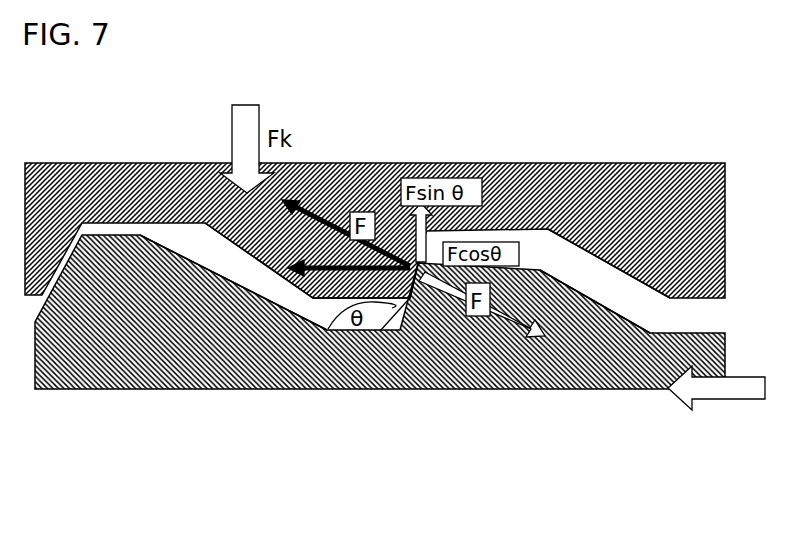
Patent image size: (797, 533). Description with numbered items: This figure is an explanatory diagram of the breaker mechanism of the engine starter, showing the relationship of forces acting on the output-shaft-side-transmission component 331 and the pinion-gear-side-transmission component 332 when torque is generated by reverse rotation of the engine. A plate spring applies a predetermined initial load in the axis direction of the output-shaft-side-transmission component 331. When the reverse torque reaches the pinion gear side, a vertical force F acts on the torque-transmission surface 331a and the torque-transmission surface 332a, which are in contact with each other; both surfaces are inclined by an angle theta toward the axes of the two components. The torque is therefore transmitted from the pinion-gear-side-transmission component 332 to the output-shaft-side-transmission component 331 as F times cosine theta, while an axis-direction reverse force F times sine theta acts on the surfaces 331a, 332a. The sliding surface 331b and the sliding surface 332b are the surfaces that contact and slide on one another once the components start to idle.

The output-shaft-side-transmission component 331 is at (183, 163).
The torque-transmission surface 331a is at (582, 229).
The sliding surface 331b is at (650, 287).
The pinion-gear-side-transmission component 332 is at (384, 389).
The torque-transmission surface 332a is at (330, 334).
The sliding surface 332b is at (583, 293).